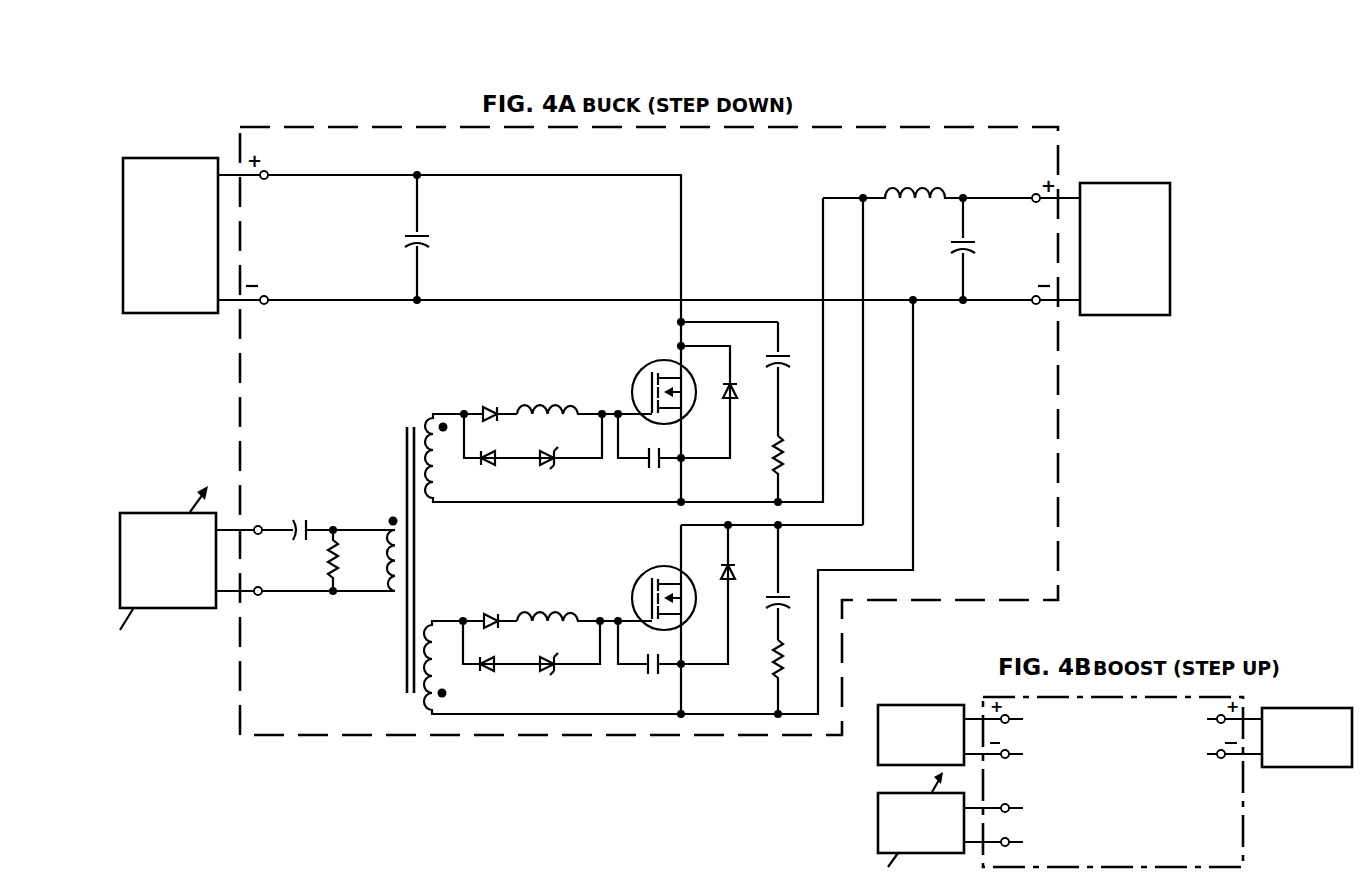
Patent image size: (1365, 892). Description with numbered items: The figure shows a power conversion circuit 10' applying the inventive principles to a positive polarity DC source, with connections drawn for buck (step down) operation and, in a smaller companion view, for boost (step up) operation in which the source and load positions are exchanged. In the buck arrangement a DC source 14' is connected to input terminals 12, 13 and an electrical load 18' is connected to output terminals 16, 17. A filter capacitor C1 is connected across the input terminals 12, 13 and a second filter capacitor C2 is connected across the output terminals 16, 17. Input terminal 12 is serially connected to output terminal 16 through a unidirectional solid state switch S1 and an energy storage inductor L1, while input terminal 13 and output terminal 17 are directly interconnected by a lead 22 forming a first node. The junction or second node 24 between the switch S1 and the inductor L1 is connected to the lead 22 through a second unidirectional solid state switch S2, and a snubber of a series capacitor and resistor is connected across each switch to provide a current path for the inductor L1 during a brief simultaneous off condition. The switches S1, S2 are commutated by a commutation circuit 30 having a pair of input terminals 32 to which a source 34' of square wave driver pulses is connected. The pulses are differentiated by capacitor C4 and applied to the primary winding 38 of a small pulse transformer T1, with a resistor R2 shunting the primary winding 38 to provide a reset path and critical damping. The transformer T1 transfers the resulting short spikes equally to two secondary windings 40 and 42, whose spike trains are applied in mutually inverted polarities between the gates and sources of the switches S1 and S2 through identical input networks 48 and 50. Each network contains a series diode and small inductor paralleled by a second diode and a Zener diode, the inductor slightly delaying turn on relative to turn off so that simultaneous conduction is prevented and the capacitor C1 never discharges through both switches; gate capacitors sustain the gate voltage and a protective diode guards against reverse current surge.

In FIG. 4A, the power conversion circuit 10' is at (688, 431).
In FIG. 4B, the power conversion circuit 10' is at (1113, 782).
In FIG. 4A, the input terminal 12 is at (268, 170).
In FIG. 4B, the input terminal 12 is at (1011, 723).
In FIG. 4A, the input terminal 13 is at (267, 306).
In FIG. 4B, the input terminal 13 is at (1011, 758).
In FIG. 4A, the DC source 14' is at (170, 258).
In FIG. 4B, the DC source 14' is at (1307, 762).
In FIG. 4A, the output terminal 16 is at (1031, 193).
In FIG. 4B, the output terminal 16 is at (1214, 722).
In FIG. 4A, the output terminal 17 is at (1036, 306).
In FIG. 4B, the output terminal 17 is at (1214, 758).
In FIG. 4A, the electrical load 18' is at (1125, 272).
In FIG. 4B, the electrical load 18' is at (892, 741).
In FIG. 4A, the lead 22 is at (556, 298).
In FIG. 4A, the second node 24 is at (863, 194).
In FIG. 4A, the commutation circuit 30 is at (376, 549).
In FIG. 4A, the input terminals 32 is at (259, 536).
In FIG. 4B, the input terminals 32 is at (1011, 812).
In FIG. 4A, the source of square wave driver pulses 34' is at (168, 575).
In FIG. 4B, the source of square wave driver pulses 34' is at (892, 819).
In FIG. 4A, the primary winding 38 is at (388, 596).
In FIG. 4A, the secondary winding 40 is at (431, 500).
In FIG. 4A, the secondary winding 42 is at (424, 620).
In FIG. 4A, the input network 48 is at (603, 455).
In FIG. 4A, the input network 50 is at (600, 660).
In FIG. 4A, the filter capacitor C1 is at (403, 237).
In FIG. 4A, the filter capacitor C2 is at (951, 249).
In FIG. 4A, the differentiating capacitor C4 is at (274, 517).
In FIG. 4A, the energy storage inductor L1 is at (951, 182).
In FIG. 4A, the resistor R2 is at (317, 560).
In FIG. 4A, the unidirectional solid state switch S1 is at (657, 384).
In FIG. 4A, the second unidirectional solid state switch S2 is at (657, 590).
In FIG. 4A, the pulse transformer T1 is at (398, 661).